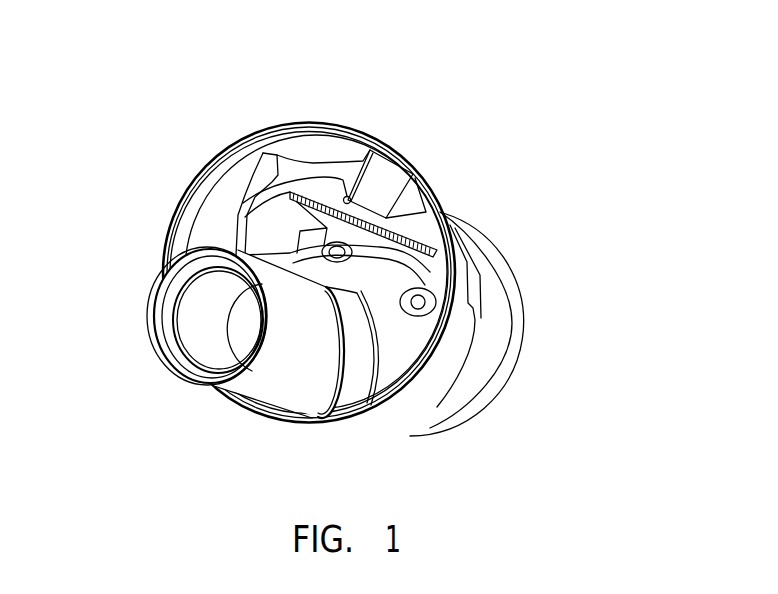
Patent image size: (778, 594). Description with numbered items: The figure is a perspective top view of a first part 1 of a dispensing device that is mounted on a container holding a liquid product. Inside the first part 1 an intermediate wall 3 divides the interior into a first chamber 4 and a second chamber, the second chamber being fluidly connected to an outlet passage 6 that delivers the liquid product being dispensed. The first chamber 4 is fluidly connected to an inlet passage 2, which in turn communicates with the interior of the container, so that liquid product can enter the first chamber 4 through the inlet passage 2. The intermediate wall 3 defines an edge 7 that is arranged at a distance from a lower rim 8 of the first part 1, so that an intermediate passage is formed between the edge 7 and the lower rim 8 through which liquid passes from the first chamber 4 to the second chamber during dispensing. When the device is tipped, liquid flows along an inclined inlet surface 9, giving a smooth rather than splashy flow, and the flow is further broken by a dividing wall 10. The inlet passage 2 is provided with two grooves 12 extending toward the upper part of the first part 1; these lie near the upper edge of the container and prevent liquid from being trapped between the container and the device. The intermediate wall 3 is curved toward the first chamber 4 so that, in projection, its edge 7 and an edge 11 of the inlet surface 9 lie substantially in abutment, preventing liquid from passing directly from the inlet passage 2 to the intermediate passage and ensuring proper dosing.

The first part 1 is at (557, 137).
The inlet passage 2 is at (328, 166).
The intermediate wall 3 is at (390, 342).
The first chamber 4 is at (295, 228).
The outlet passage 6 is at (205, 323).
The edge 7 is at (428, 268).
The lower rim 8 is at (503, 400).
The inlet surface 9 is at (412, 215).
The dividing wall 10 is at (383, 187).
The edge of the inlet surface 11 is at (412, 245).
The grooves 12 is at (278, 160).